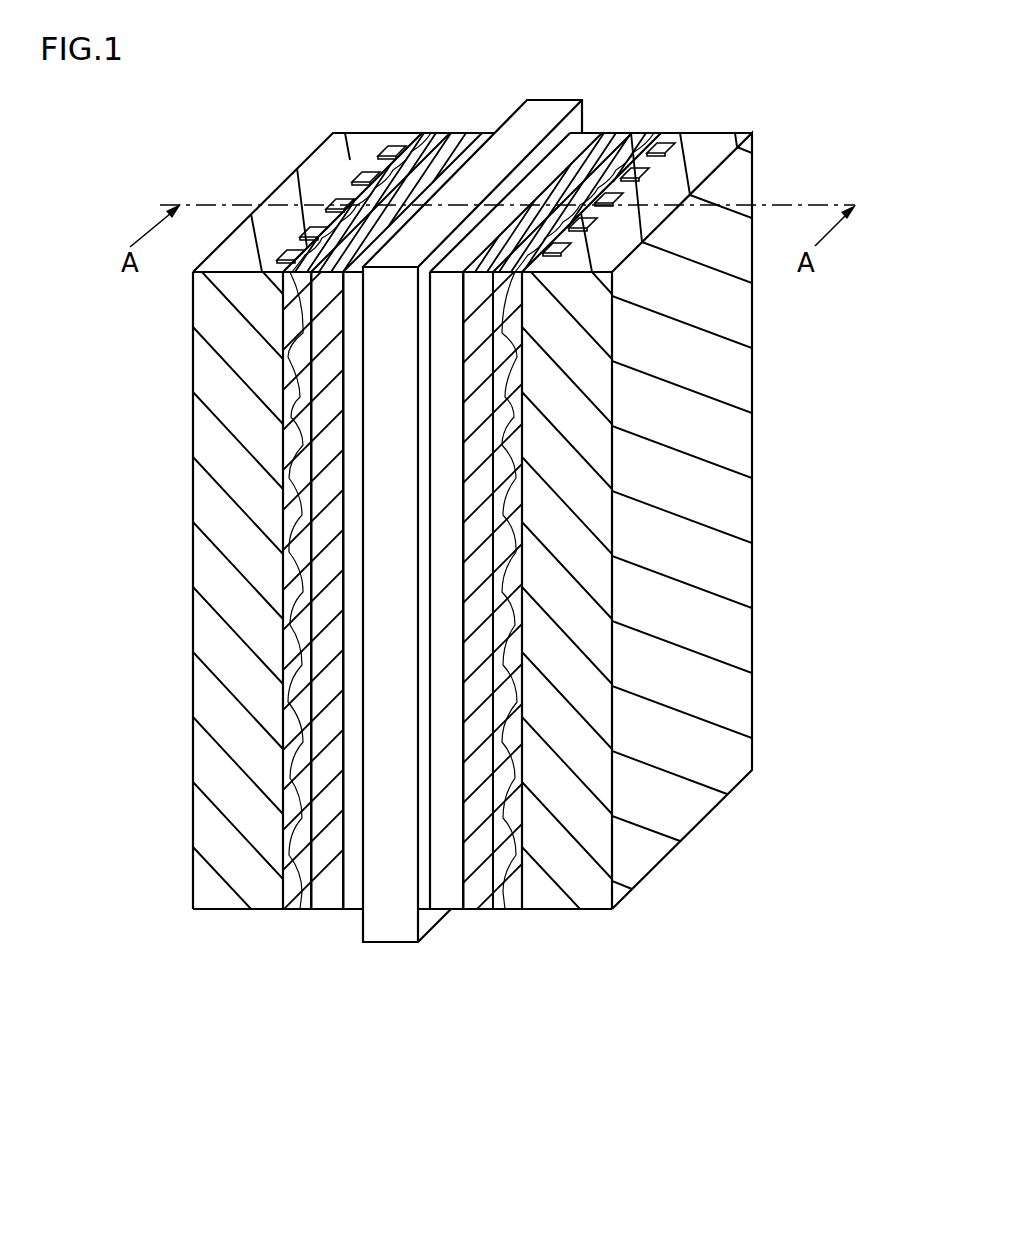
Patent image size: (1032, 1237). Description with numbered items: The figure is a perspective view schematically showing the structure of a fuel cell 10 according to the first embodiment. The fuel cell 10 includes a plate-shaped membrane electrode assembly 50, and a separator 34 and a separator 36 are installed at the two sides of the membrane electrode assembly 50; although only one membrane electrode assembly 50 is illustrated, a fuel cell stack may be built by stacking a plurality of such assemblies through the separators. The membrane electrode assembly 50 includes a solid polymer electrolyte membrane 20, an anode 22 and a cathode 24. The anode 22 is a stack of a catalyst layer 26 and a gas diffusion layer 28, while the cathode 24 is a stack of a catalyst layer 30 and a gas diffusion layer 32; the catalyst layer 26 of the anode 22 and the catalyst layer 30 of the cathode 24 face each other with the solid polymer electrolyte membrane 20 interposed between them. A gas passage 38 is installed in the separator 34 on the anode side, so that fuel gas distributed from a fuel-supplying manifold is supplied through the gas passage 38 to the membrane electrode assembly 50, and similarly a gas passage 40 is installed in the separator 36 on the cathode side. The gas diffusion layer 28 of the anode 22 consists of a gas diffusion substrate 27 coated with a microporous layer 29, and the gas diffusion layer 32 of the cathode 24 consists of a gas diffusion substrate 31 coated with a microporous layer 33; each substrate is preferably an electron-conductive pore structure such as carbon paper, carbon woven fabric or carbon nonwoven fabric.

The fuel cell 10 is at (726, 979).
The solid polymer electrolyte membrane 20 is at (393, 942).
The anode 22 is at (283, 909).
The cathode 24 is at (429, 909).
The catalyst layer 26 is at (353, 909).
The gas diffusion substrate 27 is at (300, 453).
The gas diffusion layer 28 is at (340, 944).
The microporous layer 29 is at (327, 620).
The catalyst layer 30 is at (462, 909).
The gas diffusion substrate 31 is at (507, 433).
The gas diffusion layer 32 is at (520, 944).
The microporous layer 33 is at (483, 556).
The separator 34 is at (241, 909).
The separator 36 is at (570, 909).
The gas passage 38 is at (360, 176).
The gas passage 40 is at (615, 163).
The membrane electrode assembly 50 is at (522, 1038).